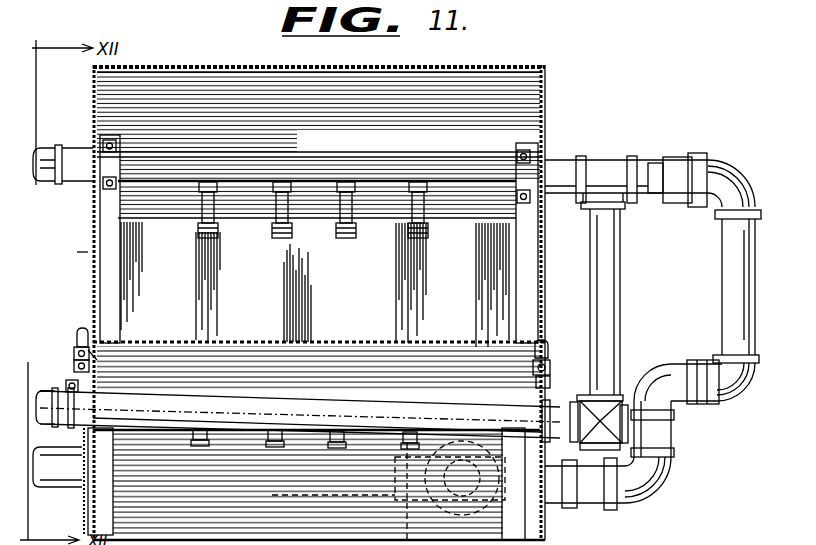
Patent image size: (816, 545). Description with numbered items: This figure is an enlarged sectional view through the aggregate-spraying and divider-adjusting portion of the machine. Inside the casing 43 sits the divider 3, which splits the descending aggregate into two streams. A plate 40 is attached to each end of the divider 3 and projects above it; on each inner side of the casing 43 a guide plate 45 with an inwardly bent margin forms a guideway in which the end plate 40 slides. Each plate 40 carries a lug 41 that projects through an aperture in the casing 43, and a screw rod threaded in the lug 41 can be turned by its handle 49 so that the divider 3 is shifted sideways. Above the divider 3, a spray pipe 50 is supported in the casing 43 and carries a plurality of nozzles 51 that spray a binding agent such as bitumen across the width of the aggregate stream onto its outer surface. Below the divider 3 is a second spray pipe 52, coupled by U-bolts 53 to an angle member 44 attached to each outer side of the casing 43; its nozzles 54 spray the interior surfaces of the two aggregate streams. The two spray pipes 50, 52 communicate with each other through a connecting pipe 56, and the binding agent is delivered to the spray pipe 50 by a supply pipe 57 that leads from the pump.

The divider 3 is at (330, 343).
The plate 40 is at (80, 328).
The lug 41 is at (75, 347).
The casing 43 is at (90, 266).
The angle member 44 is at (75, 386).
The guide plate 45 is at (532, 343).
The handle 49 is at (78, 338).
The spray pipe 50 is at (464, 166).
The nozzles 51 is at (219, 236).
The second spray pipe 52 is at (250, 407).
The U-bolts 53 is at (578, 406).
The nozzles 54 is at (337, 447).
The connecting pipe 56 is at (609, 312).
The supply pipe 57 is at (735, 397).